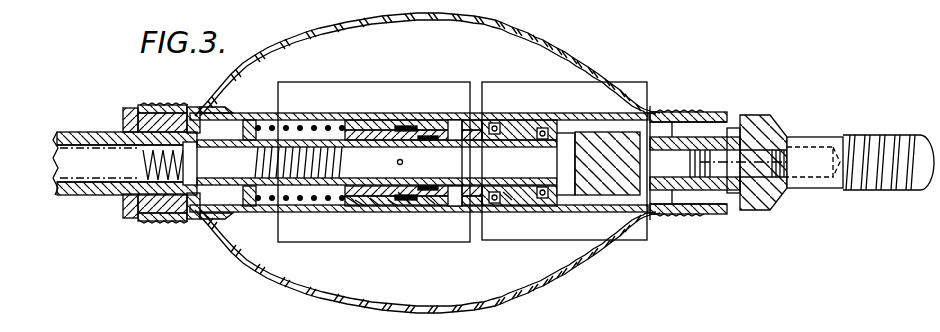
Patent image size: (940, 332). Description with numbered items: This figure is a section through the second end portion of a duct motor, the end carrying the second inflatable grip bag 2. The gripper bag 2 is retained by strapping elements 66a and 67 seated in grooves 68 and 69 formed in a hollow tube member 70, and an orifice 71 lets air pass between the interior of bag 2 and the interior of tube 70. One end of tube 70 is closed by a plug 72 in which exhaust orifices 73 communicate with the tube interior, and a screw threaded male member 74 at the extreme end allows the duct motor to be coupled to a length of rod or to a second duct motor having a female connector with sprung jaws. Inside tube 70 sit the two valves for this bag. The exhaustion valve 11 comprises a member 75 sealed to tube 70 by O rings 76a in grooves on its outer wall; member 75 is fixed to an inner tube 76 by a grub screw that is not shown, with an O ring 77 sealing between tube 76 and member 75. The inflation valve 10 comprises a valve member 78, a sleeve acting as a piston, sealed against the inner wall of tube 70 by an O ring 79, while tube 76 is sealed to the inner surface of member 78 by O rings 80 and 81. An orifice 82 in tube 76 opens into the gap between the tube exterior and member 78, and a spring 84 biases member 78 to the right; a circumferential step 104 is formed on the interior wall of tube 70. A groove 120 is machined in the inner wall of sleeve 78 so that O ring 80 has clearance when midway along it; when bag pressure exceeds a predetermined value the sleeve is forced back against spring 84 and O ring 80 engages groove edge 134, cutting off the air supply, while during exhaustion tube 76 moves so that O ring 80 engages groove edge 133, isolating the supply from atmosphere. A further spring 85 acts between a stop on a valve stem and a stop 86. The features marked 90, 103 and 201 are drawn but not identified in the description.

The inflatable grip bag 2 is at (540, 40).
The inflation valve 10 is at (322, 84).
The exhaustion valve 11 is at (650, 84).
The strapping element 66a is at (167, 105).
The strapping element 67 is at (670, 112).
The groove 68 is at (133, 107).
The groove 69 is at (702, 96).
The hollow tube member 70 is at (422, 125).
The orifice 71 is at (464, 114).
The plug 72 is at (736, 116).
The exhaust orifices 73 is at (720, 200).
The screw threaded male member 74 is at (880, 134).
The member 75 is at (650, 222).
The tube 76 is at (196, 219).
The O rings 76a is at (508, 198).
The O ring 77 is at (615, 187).
The valve member 78 is at (405, 200).
The O ring 79 is at (360, 206).
The O ring 80 is at (430, 200).
The O ring 81 is at (358, 203).
The orifice 82 is at (400, 199).
The spring 84 is at (286, 125).
The spring 85 is at (148, 178).
The stop 86 is at (147, 219).
The inner tube 90 is at (482, 195).
The ring 103 is at (375, 202).
The circumferential step 104 is at (393, 205).
The groove 120 is at (412, 125).
The groove edge 133 is at (400, 127).
The groove edge 134 is at (455, 116).
The sleeve 201 is at (392, 124).